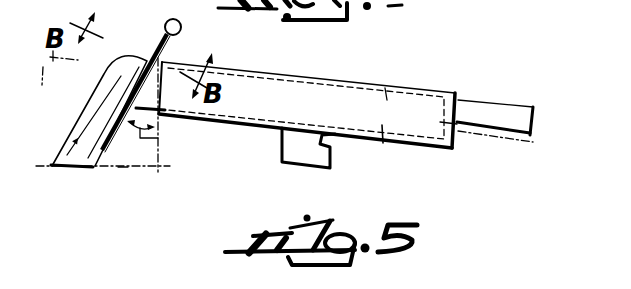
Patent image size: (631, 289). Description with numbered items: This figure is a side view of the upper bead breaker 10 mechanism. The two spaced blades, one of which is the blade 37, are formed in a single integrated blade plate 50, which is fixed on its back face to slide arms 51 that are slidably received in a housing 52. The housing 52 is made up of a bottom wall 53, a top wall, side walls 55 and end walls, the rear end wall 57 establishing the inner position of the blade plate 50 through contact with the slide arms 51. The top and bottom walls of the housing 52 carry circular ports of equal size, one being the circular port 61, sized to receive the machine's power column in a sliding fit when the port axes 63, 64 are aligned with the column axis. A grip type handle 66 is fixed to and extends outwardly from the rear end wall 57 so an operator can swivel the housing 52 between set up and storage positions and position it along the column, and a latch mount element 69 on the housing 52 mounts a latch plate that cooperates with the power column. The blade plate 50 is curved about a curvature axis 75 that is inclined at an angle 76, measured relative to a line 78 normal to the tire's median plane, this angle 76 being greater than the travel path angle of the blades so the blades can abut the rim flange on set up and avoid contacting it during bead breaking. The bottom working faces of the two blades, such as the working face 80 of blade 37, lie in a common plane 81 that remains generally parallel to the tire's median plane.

The upper bead breaker 10 is at (442, 51).
The blade 37 is at (62, 168).
The blade plate 50 is at (98, 82).
The slide arms 51 is at (306, 70).
The housing 52 is at (276, 70).
The bottom wall 53 is at (250, 125).
The side walls 55 is at (292, 100).
The rear end wall 57 is at (460, 133).
The circular port 61 is at (180, 21).
The axis 63 is at (388, 88).
The axis 64 is at (380, 142).
The grip type handle 66 is at (510, 104).
The latch mount element 69 is at (303, 153).
The curvature axis 75 is at (80, 57).
The angle of inclination 76 is at (158, 138).
The line normal to median plane 78 is at (160, 150).
The working face 80 is at (78, 167).
The common plane 81 is at (131, 203).